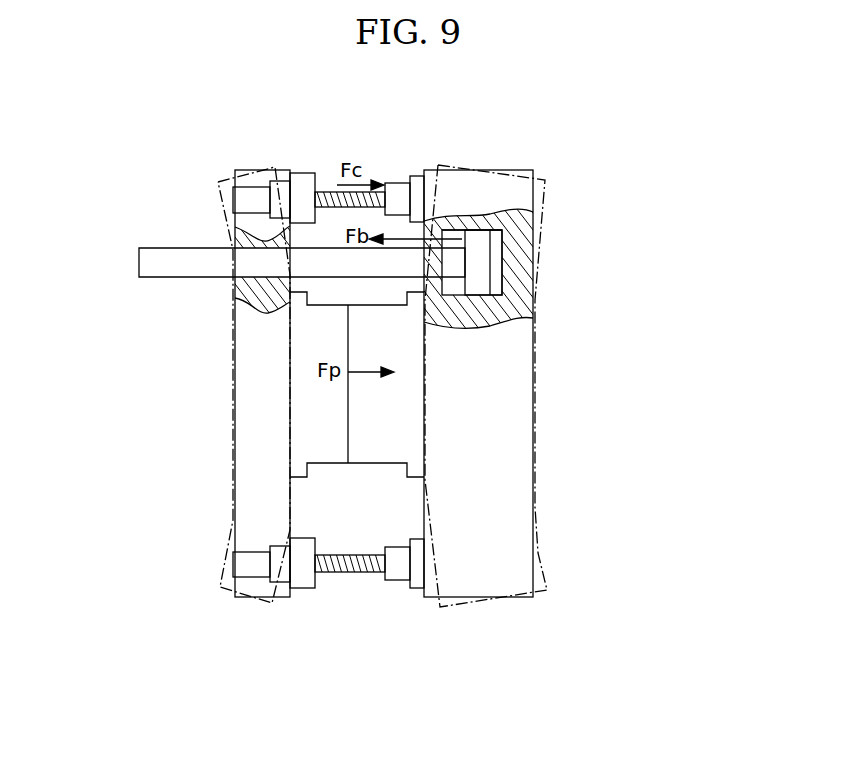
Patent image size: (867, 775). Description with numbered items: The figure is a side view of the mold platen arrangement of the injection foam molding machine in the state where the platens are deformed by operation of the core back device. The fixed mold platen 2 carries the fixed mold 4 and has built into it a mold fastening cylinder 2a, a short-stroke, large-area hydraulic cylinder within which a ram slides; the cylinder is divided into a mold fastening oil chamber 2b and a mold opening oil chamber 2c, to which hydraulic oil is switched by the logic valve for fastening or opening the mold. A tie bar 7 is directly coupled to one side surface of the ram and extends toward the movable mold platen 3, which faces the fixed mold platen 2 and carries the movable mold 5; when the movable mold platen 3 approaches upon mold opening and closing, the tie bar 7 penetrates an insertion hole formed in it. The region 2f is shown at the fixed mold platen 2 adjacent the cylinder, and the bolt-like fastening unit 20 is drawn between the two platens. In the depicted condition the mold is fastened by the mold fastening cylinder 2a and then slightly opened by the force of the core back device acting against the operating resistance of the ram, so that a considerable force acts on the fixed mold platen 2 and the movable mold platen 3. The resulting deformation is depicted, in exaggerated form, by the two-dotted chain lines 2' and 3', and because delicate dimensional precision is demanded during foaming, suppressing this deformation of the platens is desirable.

The fixed mold platen 2 is at (513, 383).
The deformed fixed mold platen 2' is at (542, 386).
The mold fastening cylinder 2a is at (473, 298).
The mold fastening oil chamber 2b is at (452, 237).
The mold opening oil chamber 2c is at (495, 265).
The wall portion of second plate 2f is at (477, 222).
The movable mold platen 3 is at (266, 383).
The deformed movable mold platen 3' is at (211, 385).
The fixed mold 4 is at (373, 465).
The movable mold 5 is at (323, 465).
The tie bar 7 is at (139, 265).
The bolt fastening unit 20 is at (338, 152).